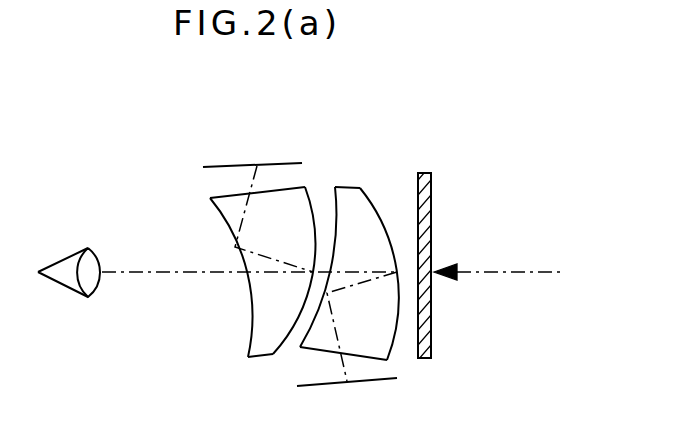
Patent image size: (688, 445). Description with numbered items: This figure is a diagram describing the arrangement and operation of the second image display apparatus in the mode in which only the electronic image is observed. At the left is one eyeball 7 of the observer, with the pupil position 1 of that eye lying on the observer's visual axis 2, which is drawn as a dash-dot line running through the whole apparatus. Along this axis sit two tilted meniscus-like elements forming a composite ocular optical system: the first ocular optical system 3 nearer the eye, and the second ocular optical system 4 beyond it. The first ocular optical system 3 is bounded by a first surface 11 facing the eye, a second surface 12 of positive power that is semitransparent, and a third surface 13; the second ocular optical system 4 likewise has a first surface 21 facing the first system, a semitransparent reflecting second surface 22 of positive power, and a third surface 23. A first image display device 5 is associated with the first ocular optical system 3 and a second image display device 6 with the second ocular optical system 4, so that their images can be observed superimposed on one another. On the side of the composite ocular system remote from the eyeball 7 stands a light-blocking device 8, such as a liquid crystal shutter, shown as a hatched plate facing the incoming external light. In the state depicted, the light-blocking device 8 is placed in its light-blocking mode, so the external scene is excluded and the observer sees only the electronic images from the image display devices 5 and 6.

The pupil position 1 is at (99, 257).
The observer's visual axis 2 is at (183, 273).
The first ocular optical system 3 is at (225, 220).
The second ocular optical system 4 is at (355, 195).
The first image display device 5 is at (230, 167).
The second image display device 6 is at (387, 381).
The eyeball 7 is at (67, 251).
The light-blocking device 8 is at (432, 187).
The first surface 11 is at (250, 330).
The second surface 12 is at (286, 342).
The third surface 13 is at (210, 198).
The first surface 21 is at (337, 205).
The second surface 22 is at (375, 208).
The third surface 23 is at (384, 361).